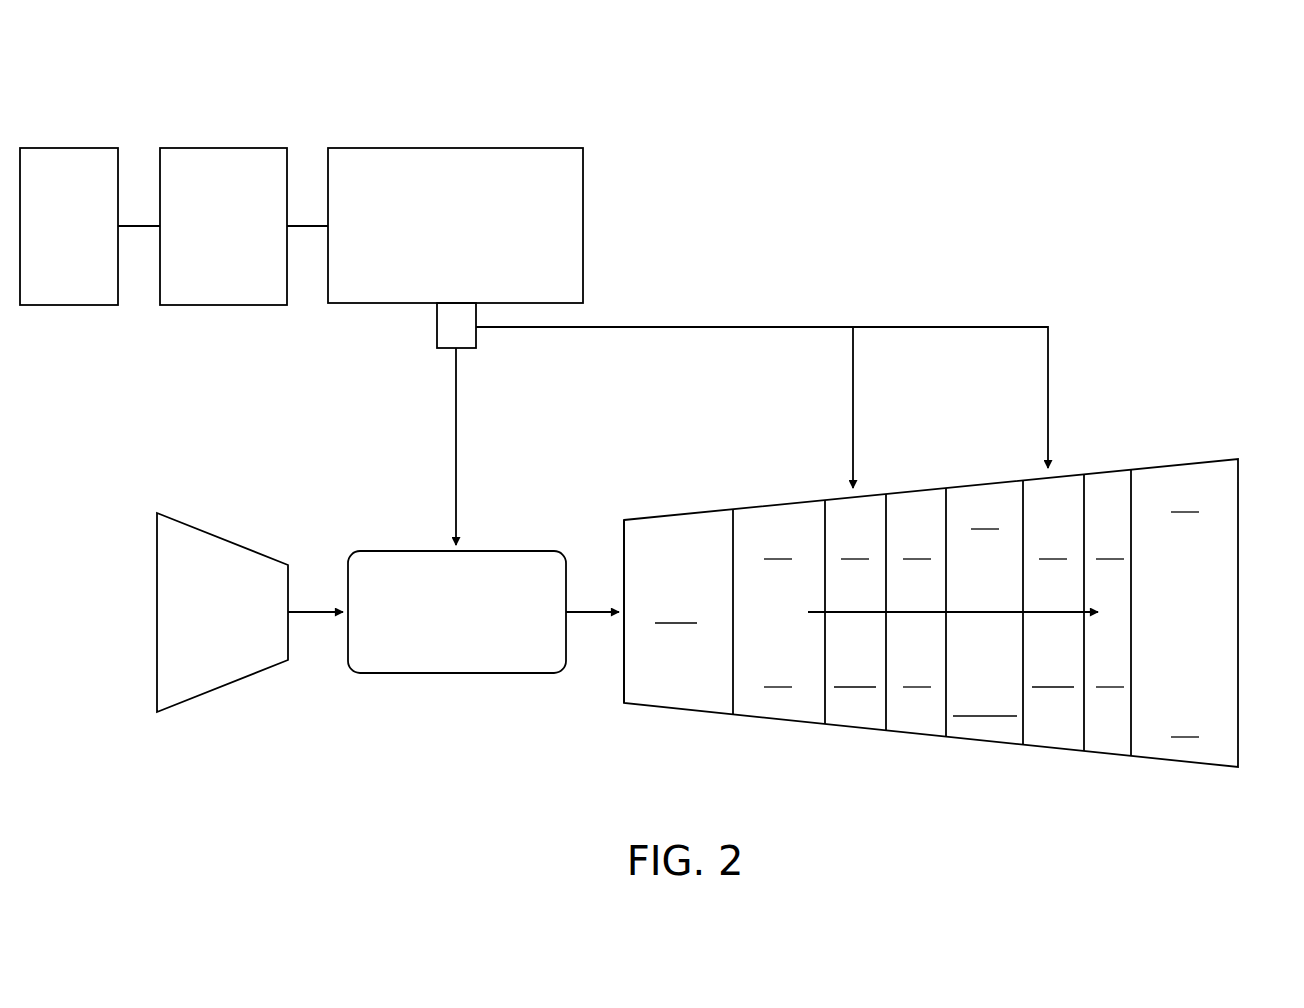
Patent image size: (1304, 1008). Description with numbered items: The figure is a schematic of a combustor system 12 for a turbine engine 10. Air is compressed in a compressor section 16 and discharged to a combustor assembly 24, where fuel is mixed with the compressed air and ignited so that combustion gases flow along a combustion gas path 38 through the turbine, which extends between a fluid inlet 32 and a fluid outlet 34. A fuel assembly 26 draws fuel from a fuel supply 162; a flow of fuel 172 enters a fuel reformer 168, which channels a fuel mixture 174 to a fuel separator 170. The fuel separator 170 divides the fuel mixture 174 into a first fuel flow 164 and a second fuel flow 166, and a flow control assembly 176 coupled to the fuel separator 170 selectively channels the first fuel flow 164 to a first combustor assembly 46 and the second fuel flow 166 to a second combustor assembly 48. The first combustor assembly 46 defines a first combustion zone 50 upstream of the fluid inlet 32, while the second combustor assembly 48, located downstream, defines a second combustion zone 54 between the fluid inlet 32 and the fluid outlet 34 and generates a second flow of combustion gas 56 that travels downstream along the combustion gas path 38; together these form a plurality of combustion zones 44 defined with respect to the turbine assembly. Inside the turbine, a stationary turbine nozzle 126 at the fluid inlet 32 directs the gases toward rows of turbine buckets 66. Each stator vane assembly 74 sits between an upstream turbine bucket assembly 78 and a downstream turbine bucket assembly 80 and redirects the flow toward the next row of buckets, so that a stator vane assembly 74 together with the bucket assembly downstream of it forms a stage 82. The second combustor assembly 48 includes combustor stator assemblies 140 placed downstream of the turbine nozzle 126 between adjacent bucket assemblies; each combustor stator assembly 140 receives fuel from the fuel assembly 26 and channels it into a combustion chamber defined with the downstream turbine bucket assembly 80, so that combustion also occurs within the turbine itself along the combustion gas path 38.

The turbine engine 10 is at (1005, 98).
The combustor system 12 is at (799, 188).
The compressor section 16 is at (232, 690).
The combustor assembly 24 is at (458, 674).
The fuel assembly 26 is at (607, 120).
The fluid inlet 32 is at (622, 700).
The fluid outlet 34 is at (1240, 493).
The combustion gas path 38 is at (1060, 610).
The combustion zone 44 is at (528, 568).
The first combustor assembly 46 is at (486, 550).
The second combustor assembly 48 is at (867, 492).
The first combustion zone 50 is at (539, 660).
The second combustion zone 54 is at (993, 612).
The second flow of combustion gas 56 is at (1113, 613).
The turbine bucket 66 is at (981, 606).
The stator vane assembly 74 is at (954, 612).
The upstream turbine bucket assembly 78 is at (890, 612).
The downstream turbine bucket assembly 80 is at (1140, 400).
The stage 82 is at (955, 420).
The turbine nozzle 126 is at (694, 611).
The combustor stator assembly 140 is at (954, 612).
The fuel supply 162 is at (69, 135).
The first fuel flow 164 is at (457, 446).
The second fuel flow 166 is at (716, 327).
The fuel reformer 168 is at (222, 148).
The fuel separator 170 is at (456, 148).
The flow of fuel 172 is at (138, 224).
The fuel mixture 174 is at (306, 224).
The flow control assembly 176 is at (437, 327).